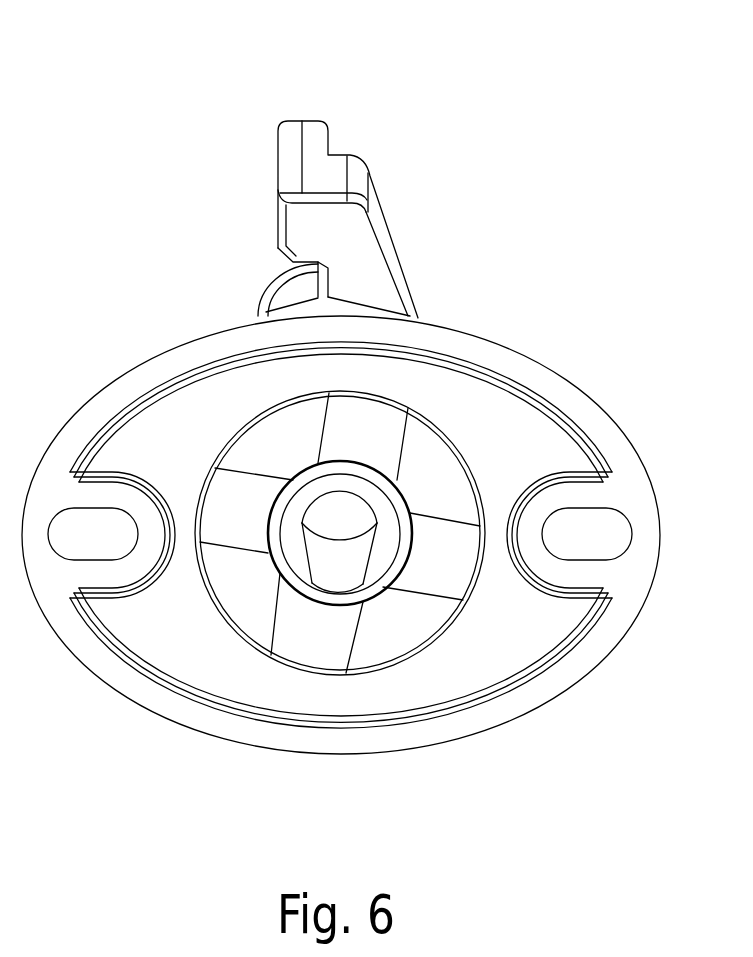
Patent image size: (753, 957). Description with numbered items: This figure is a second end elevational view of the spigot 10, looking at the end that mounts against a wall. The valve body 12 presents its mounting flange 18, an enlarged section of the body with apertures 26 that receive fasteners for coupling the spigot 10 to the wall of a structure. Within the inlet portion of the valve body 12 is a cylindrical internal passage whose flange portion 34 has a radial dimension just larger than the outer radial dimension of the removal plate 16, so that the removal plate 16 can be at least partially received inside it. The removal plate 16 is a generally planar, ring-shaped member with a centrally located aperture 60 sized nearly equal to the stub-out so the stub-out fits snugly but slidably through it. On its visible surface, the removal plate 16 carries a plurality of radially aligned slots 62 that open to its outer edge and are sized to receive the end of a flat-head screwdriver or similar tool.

The spigot 10 is at (70, 132).
The valve body 12 is at (486, 325).
The removal plate 16 is at (412, 652).
The mounting flange 18 is at (577, 388).
The apertures 26 is at (602, 562).
The flange portion 34 is at (212, 470).
The aperture 60 is at (297, 480).
The slots 62 is at (277, 628).